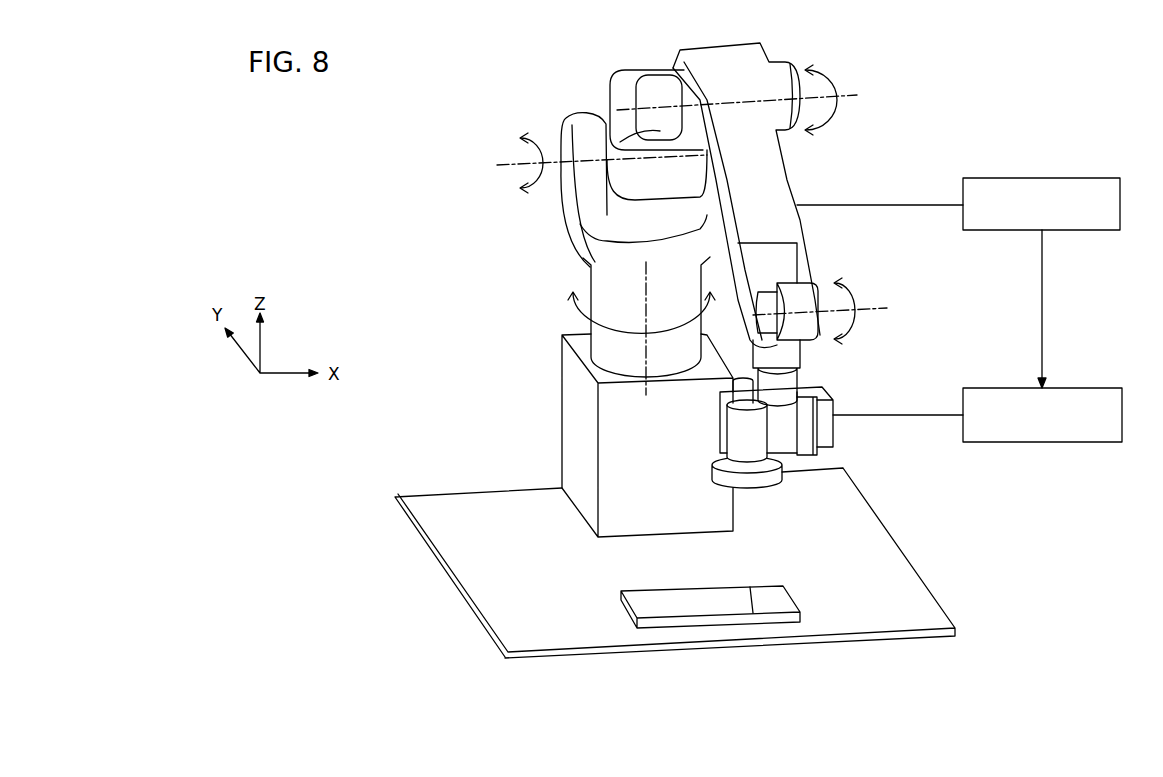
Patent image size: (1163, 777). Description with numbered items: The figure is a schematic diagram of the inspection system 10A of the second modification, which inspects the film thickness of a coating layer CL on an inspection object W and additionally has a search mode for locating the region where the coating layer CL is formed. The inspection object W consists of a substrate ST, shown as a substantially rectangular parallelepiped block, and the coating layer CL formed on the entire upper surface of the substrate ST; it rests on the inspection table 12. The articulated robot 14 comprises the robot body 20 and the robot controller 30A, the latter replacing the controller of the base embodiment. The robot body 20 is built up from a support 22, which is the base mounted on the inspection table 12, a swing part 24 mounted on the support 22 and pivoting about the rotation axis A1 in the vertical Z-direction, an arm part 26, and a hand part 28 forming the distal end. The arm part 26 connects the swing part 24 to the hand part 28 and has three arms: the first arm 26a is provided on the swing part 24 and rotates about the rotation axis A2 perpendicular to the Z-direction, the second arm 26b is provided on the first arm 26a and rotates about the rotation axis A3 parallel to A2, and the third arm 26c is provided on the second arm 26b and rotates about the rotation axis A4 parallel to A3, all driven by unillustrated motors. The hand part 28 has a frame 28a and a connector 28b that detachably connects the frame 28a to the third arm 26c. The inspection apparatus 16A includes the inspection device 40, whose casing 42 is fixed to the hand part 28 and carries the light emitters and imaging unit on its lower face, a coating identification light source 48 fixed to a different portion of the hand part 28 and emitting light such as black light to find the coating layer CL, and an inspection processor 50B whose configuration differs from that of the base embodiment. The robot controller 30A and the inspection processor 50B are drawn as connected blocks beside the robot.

The inspection system 10A is at (360, 130).
The inspection table 12 is at (520, 608).
The articulated robot 14 is at (1008, 123).
The inspection apparatus 16A is at (1000, 500).
The robot body 20 is at (893, 159).
The support 22 is at (598, 403).
The swing part 24 is at (616, 337).
The arm part 26 is at (797, 51).
The first arm 26a is at (589, 168).
The second arm 26b is at (750, 195).
The third arm 26c is at (833, 291).
The hand part 28 is at (911, 348).
The frame 28a is at (822, 396).
The connector 28b is at (787, 380).
The robot controller 30A is at (988, 178).
The inspection device 40 is at (767, 480).
The casing 42 is at (737, 452).
The coating identification light source 48 is at (807, 427).
The inspection processor 50B is at (978, 443).
The rotation axis A1 is at (649, 340).
The rotation axis A2 is at (640, 178).
The rotation axis A3 is at (750, 100).
The rotation axis A4 is at (798, 292).
The inspection object W is at (710, 654).
The substrate ST is at (697, 623).
The coating layer CL is at (743, 602).